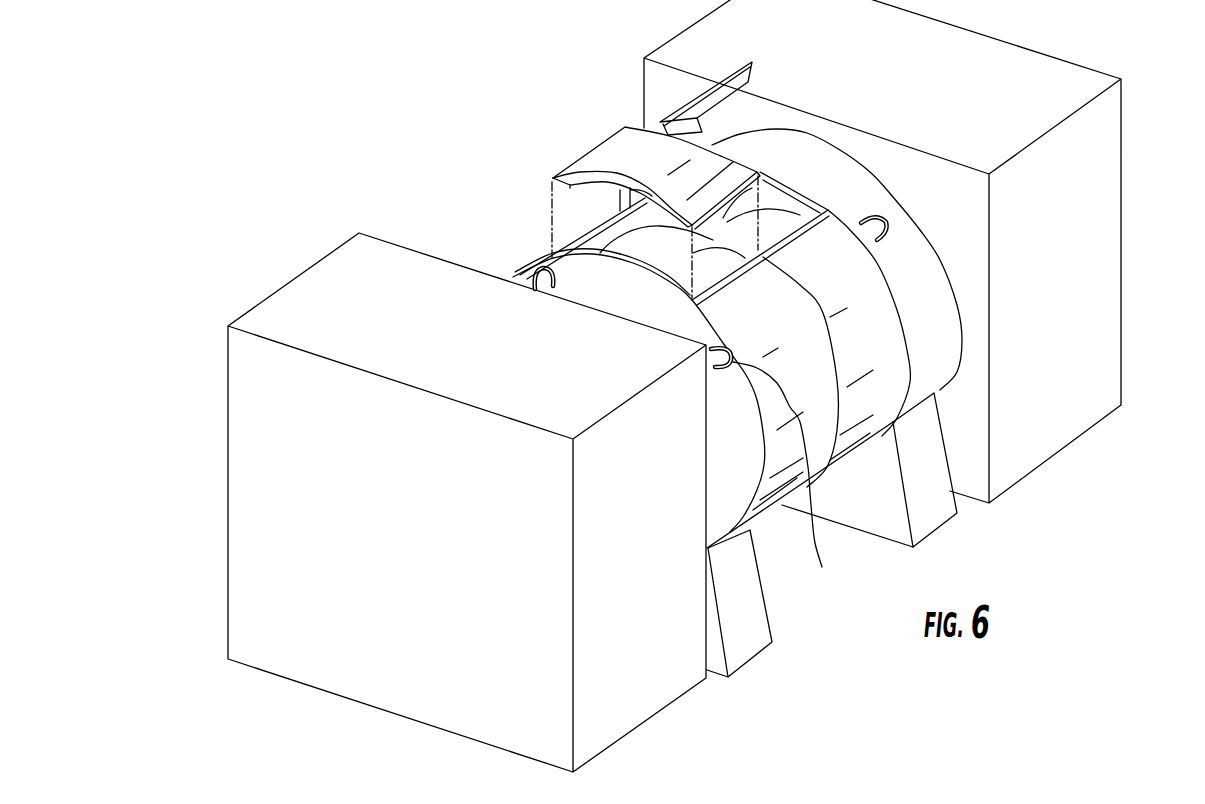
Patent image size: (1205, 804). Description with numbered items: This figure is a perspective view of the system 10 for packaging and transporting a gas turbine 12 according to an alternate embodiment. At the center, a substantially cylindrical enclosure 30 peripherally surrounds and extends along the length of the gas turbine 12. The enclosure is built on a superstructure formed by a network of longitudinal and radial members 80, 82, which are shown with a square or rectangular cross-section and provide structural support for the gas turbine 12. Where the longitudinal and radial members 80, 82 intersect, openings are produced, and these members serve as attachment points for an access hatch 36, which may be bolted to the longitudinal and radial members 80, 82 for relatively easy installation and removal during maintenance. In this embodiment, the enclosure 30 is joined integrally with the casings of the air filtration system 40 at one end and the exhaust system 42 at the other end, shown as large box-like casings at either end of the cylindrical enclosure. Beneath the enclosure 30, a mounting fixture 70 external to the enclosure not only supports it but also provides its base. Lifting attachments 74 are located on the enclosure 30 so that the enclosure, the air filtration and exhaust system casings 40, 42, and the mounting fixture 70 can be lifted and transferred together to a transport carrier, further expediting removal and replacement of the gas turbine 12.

The system 10 is at (432, 224).
The gas turbine 12 is at (647, 120).
The enclosure 30 is at (942, 390).
The access hatch 36 is at (603, 150).
The air filtration system 40 is at (1109, 169).
The exhaust system 42 is at (227, 376).
The mounting fixture 70 is at (947, 457).
The lifting attachment 74 is at (522, 275).
The longitudinal member 80 is at (590, 243).
The radial member 82 is at (592, 248).